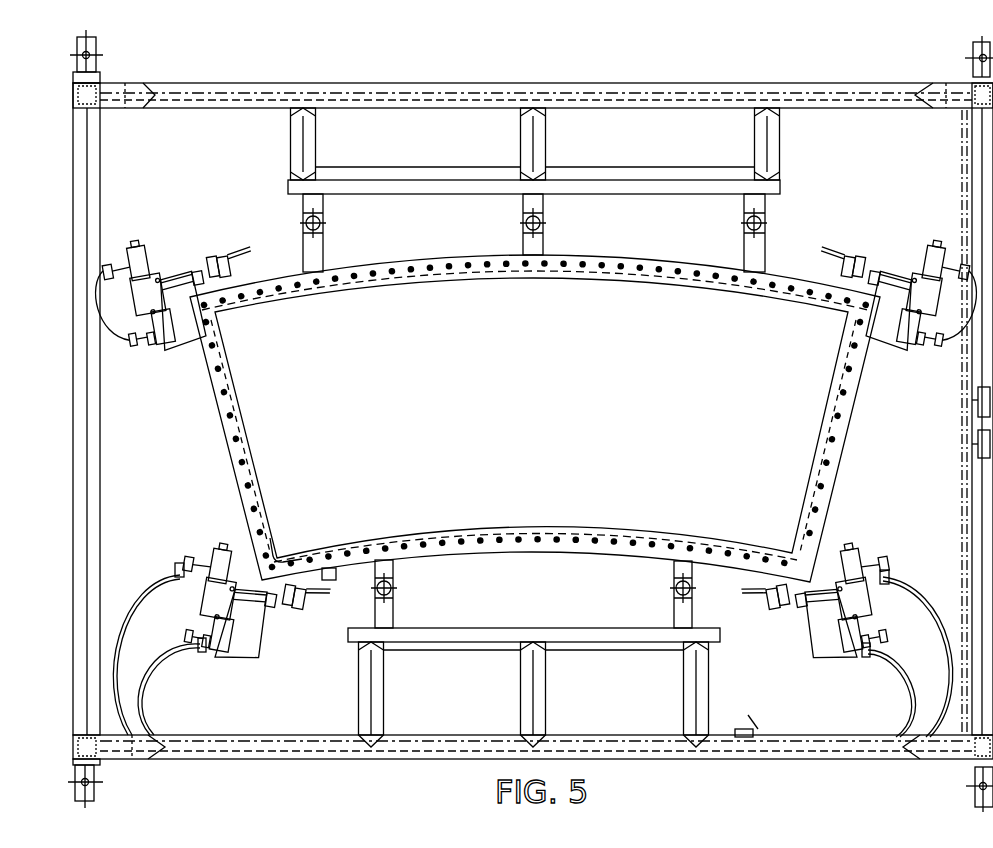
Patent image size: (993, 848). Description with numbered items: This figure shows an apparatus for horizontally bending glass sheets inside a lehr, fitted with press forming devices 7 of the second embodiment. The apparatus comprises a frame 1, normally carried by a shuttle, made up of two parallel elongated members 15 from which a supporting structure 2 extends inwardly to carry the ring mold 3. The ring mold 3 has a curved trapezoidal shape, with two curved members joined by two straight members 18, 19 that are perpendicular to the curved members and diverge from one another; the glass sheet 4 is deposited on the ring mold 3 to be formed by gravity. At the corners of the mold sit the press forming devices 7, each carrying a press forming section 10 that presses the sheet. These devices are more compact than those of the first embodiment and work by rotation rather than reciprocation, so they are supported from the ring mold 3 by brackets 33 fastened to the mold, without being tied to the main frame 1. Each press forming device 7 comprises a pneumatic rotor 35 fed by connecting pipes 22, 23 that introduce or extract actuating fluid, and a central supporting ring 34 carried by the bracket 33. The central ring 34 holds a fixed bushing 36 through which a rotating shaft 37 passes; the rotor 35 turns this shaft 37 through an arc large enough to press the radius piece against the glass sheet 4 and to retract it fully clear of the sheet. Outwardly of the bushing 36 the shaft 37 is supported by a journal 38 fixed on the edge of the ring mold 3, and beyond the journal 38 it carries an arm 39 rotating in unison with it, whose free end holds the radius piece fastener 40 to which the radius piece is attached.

The frame 1 is at (70, 492).
The supporting structure 2 is at (552, 155).
The ring mold 3 is at (527, 418).
The glass sheet 4 is at (262, 412).
The press forming device 7 is at (157, 238).
The press forming section 10 is at (290, 542).
The elongated member 15 is at (750, 92).
The straight member 18 is at (252, 432).
The straight member 19 is at (845, 430).
The connecting pipe 22 is at (137, 685).
The connecting pipe 23 is at (160, 577).
The bracket 33 is at (242, 547).
The central supporting ring 34 is at (225, 602).
The pneumatic rotor 35 is at (228, 648).
The fixed bushing 36 is at (240, 602).
The rotating shaft 37 is at (248, 597).
The journal 38 is at (283, 597).
The arm 39 is at (307, 590).
The radius piece fastener 40 is at (330, 577).